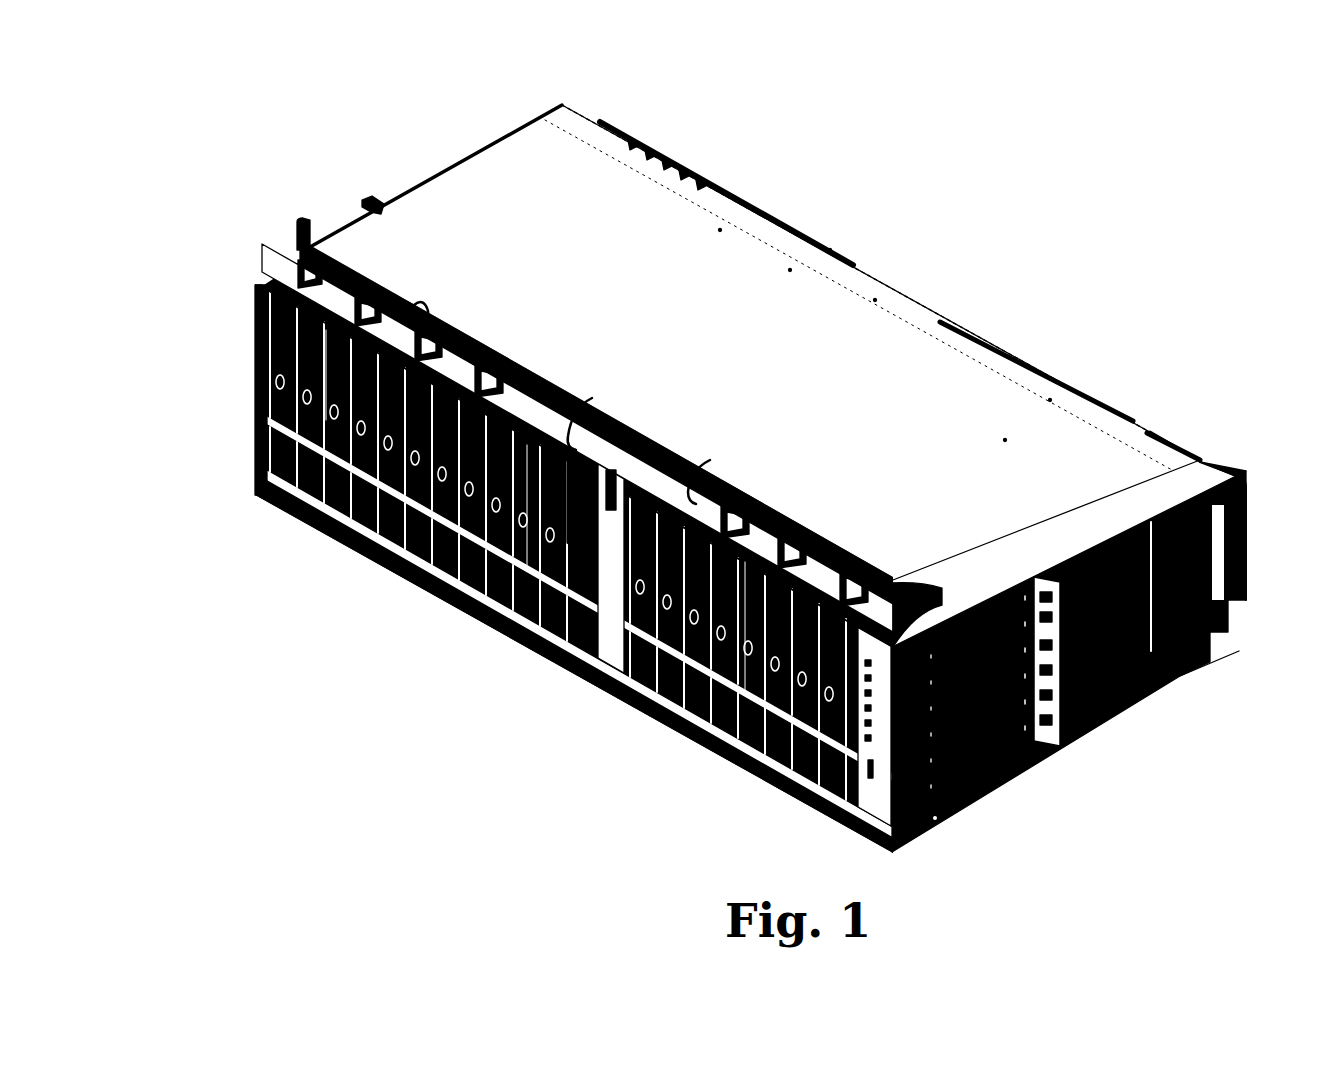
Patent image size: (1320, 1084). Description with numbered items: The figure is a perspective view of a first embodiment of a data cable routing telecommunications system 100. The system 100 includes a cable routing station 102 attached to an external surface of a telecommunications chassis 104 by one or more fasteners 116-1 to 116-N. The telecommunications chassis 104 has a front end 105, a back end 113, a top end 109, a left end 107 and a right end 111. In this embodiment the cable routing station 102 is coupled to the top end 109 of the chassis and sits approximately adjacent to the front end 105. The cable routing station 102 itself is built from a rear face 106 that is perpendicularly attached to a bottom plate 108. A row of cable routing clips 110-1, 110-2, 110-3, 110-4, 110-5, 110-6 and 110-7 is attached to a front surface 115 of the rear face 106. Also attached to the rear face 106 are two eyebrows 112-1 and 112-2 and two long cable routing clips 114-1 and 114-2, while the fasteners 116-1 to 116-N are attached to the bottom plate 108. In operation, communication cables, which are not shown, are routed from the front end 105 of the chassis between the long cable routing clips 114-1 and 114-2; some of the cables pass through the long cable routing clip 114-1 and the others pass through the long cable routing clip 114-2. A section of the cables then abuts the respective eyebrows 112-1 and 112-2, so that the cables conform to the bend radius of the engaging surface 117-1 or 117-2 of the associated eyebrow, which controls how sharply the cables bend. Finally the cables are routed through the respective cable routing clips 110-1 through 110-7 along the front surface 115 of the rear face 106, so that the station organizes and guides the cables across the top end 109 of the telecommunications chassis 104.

The data cable routing telecommunications system 100 is at (805, 188).
The cable routing station 102 is at (406, 312).
The telecommunications chassis 104 is at (578, 540).
The front end 105 is at (537, 547).
The rear face 106 is at (878, 583).
The left end 107 is at (366, 206).
The bottom plate 108 is at (745, 537).
The top end 109 is at (912, 425).
The cable routing clip 110-1 is at (303, 265).
The cable routing clip 110-2 is at (356, 318).
The cable routing clip 110-3 is at (445, 337).
The cable routing clip 110-4 is at (512, 370).
The cable routing clip 110-5 is at (733, 513).
The cable routing clip 110-6 is at (790, 547).
The cable routing clip 110-7 is at (853, 577).
The right end 111 is at (1036, 776).
The eyebrow 112-1 is at (547, 413).
The eyebrow 112-2 is at (673, 477).
The back end 113 is at (1167, 440).
The long cable routing clip 114-1 is at (583, 450).
The long cable routing clip 114-2 is at (613, 457).
The front surface 115 is at (426, 312).
The fastener 116-1 is at (326, 290).
The fastener 116-N is at (935, 820).
The engaging surface 117-1 is at (582, 413).
The engaging surface 117-2 is at (700, 493).